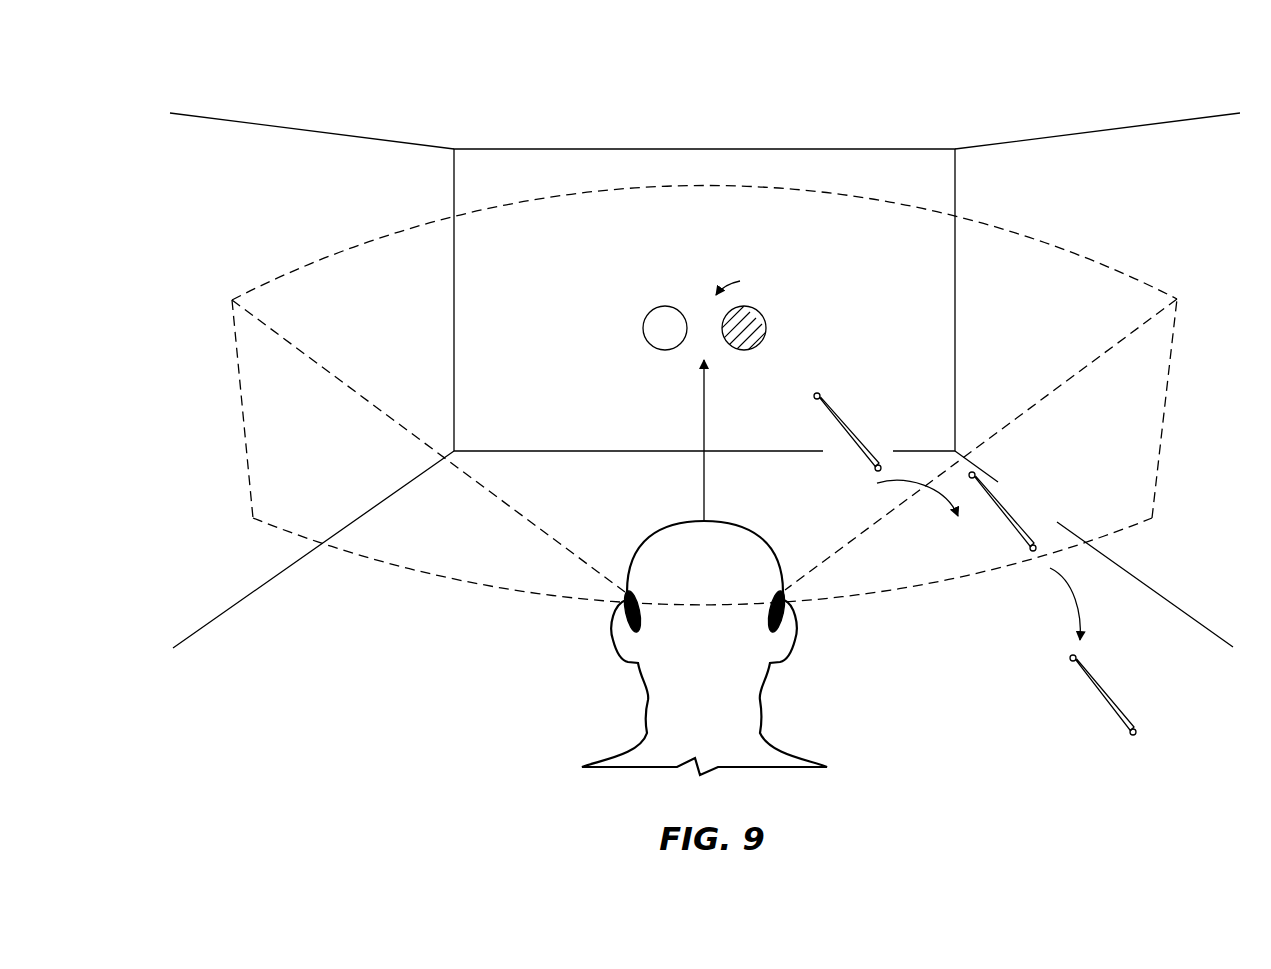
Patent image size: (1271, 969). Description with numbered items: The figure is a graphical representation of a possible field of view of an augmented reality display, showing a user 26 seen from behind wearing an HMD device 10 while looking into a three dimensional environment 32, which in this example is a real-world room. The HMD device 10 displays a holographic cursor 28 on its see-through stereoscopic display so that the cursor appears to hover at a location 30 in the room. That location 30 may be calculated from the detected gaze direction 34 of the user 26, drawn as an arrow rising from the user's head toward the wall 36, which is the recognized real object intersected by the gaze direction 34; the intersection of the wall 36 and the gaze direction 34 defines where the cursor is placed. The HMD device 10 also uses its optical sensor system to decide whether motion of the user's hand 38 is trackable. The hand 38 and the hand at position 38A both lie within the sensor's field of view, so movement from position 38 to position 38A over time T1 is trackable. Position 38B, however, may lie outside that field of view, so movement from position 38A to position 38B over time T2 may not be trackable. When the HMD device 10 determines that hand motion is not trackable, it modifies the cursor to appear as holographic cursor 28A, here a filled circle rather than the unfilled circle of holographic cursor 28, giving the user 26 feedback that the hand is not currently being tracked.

The HMD device 10 is at (630, 623).
The user 26 is at (687, 633).
The holographic cursor 28 is at (656, 311).
The holographic cursor with modified visual appearance 28A is at (768, 326).
The location 30 is at (744, 281).
The three dimensional environment 32 is at (1036, 203).
The detected gaze direction 34 is at (704, 395).
The wall 36 is at (689, 183).
The hand 38 is at (845, 425).
The hand position 38A is at (1005, 505).
The hand position 38B is at (1100, 688).
The time T1 is at (917, 486).
The time T2 is at (1079, 604).